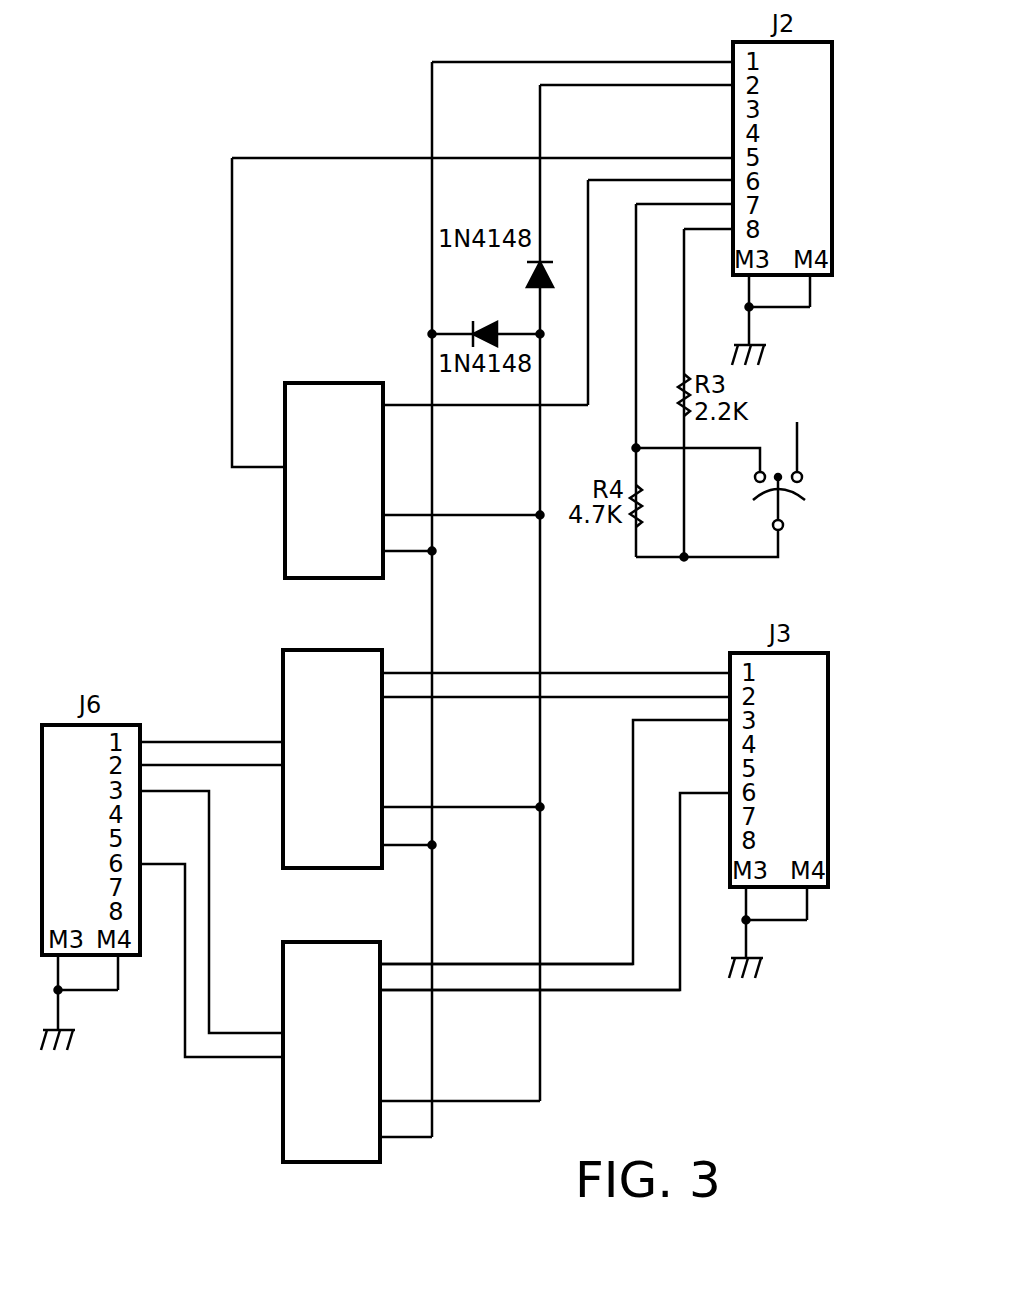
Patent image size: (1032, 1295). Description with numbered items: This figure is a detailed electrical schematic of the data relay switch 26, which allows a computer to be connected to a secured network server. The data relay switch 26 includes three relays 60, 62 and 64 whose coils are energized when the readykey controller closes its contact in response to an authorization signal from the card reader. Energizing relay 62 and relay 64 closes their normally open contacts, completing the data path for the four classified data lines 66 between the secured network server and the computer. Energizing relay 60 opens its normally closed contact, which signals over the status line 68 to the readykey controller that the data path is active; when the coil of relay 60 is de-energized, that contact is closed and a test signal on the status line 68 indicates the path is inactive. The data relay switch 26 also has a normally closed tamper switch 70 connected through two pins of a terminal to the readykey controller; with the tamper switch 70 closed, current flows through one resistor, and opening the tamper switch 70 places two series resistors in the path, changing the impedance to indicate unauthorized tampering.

The data relay switch 26 is at (271, 124).
The relay 60 is at (300, 392).
The relay 62 is at (298, 660).
The relay 64 is at (298, 952).
The classified data lines 66 is at (262, 765).
The status line 68 is at (411, 158).
The tamper switch 70 is at (818, 456).